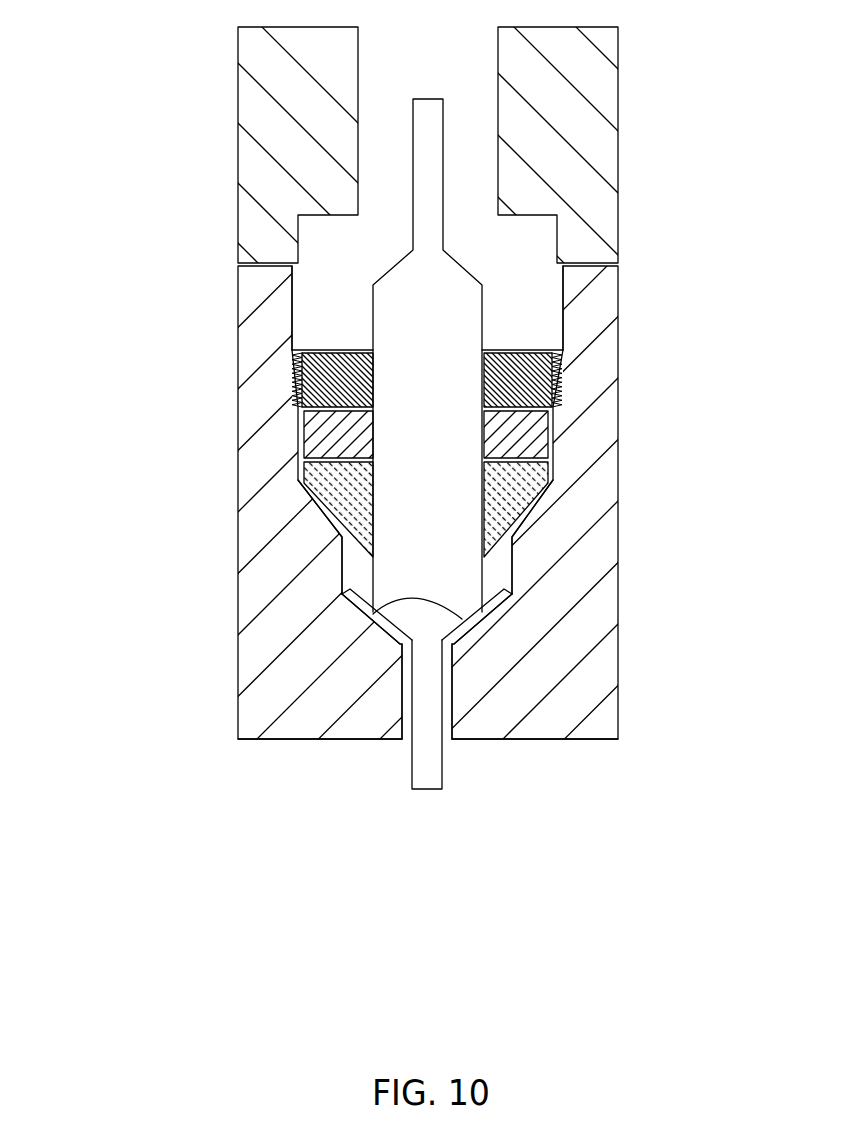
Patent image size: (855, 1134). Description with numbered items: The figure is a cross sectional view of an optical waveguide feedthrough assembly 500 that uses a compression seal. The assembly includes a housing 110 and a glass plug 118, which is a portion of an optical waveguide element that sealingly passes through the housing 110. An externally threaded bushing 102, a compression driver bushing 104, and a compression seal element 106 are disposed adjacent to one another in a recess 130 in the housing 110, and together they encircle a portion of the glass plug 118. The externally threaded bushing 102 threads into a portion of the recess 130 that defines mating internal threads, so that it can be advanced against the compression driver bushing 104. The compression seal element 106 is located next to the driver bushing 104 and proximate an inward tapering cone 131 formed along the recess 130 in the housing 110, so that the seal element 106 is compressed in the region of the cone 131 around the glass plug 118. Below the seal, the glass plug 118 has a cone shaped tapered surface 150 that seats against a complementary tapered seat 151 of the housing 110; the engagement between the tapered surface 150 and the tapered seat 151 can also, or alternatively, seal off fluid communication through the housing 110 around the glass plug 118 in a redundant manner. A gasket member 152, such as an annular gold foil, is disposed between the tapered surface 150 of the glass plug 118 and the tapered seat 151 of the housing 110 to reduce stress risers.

The optical waveguide feedthrough assembly 500 is at (380, 563).
The housing 110 is at (237, 532).
The recess 130 is at (290, 328).
The externally threaded bushing 102 is at (560, 357).
The compression driver bushing 104 is at (547, 432).
The compression seal element 106 is at (513, 480).
The inward tapering cone 131 is at (533, 510).
The glass plug 118 is at (462, 558).
The cone shaped tapered surface 150 is at (376, 617).
The tapered seat 151 is at (470, 622).
The gasket member 152 is at (390, 622).